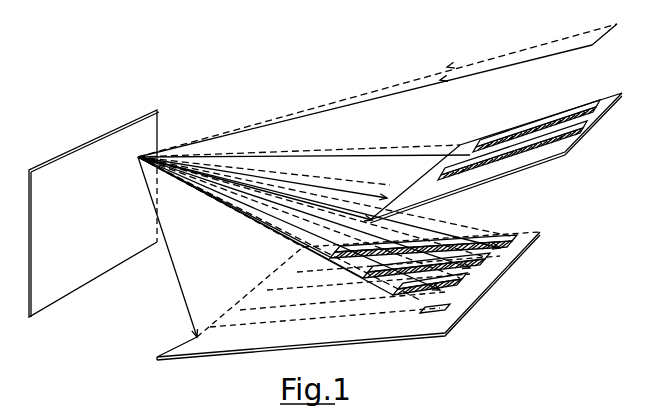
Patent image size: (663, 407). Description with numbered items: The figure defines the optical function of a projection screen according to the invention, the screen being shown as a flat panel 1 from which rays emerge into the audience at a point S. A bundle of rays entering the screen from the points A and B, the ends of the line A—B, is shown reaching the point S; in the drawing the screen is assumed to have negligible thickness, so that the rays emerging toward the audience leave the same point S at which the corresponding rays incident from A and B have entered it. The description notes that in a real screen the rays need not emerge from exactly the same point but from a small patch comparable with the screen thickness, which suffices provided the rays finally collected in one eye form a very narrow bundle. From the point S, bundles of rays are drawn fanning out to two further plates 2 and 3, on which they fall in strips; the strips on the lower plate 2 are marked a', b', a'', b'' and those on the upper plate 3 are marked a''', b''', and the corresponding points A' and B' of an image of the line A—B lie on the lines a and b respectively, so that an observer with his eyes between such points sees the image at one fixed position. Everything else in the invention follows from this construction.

The light source panel / screen 1 is at (38, 303).
The lower plate with slit rows 2 is at (353, 281).
The upper plate with slit rows 3 is at (496, 158).
The point of the screen S is at (369, 180).
The point A is at (603, 48).
The point B is at (622, 32).
The slit strip a' is at (448, 320).
The slit strip b' is at (450, 297).
The slit strip a'' is at (423, 268).
The slit strip b'' is at (456, 267).
The slit strip a''' is at (516, 160).
The slit strip b''' is at (491, 154).